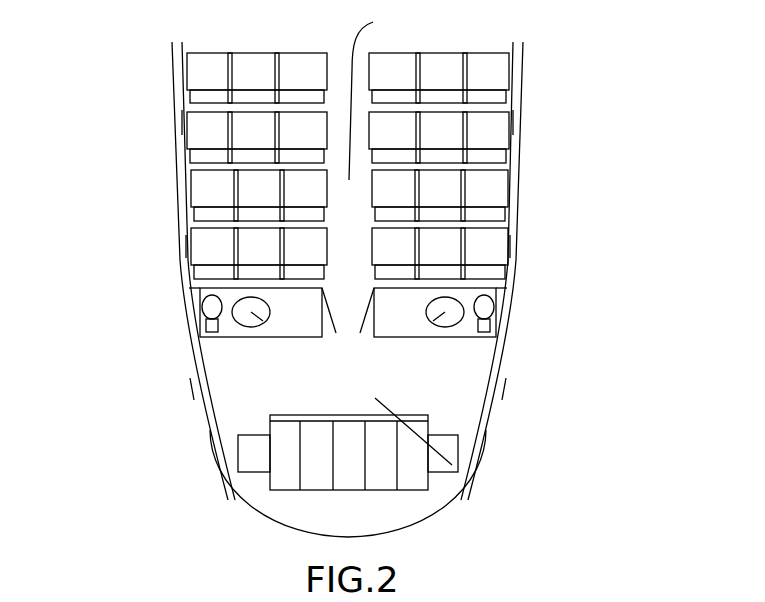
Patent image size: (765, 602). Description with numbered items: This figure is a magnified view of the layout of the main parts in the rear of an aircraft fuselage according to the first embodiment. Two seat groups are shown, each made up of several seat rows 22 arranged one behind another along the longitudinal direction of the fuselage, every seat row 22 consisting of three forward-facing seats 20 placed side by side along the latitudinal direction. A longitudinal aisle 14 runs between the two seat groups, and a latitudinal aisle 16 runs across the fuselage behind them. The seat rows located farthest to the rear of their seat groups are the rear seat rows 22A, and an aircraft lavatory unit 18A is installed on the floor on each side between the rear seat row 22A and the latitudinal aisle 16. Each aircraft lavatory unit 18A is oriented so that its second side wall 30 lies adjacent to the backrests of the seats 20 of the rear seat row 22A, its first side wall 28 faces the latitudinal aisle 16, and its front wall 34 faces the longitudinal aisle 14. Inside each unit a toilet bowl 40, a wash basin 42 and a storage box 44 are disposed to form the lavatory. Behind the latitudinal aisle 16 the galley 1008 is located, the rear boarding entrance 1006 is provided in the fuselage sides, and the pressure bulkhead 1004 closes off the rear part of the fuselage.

The longitudinal aisle 14 is at (373, 93).
The latitudinal aisle 16 is at (466, 470).
The aircraft lavatory unit 18A is at (193, 325).
The seat 20 is at (258, 230).
The seat row 22 is at (183, 125).
The rear seat row 22A is at (185, 245).
The first side wall 28 is at (285, 338).
The second side wall 30 is at (192, 290).
The front wall 34 is at (331, 335).
The toilet bowl 40 is at (258, 320).
The wash basin 42 is at (205, 303).
The storage box 44 is at (236, 336).
The pressure bulkhead 1004 is at (405, 528).
The rear boarding entrance 1006 is at (193, 390).
The galley 1008 is at (315, 492).